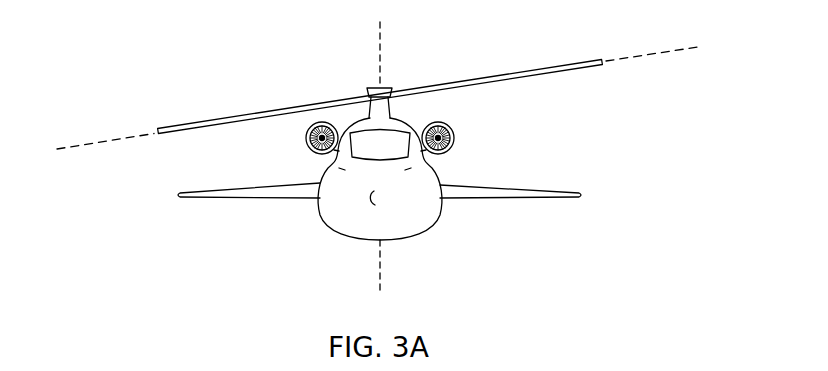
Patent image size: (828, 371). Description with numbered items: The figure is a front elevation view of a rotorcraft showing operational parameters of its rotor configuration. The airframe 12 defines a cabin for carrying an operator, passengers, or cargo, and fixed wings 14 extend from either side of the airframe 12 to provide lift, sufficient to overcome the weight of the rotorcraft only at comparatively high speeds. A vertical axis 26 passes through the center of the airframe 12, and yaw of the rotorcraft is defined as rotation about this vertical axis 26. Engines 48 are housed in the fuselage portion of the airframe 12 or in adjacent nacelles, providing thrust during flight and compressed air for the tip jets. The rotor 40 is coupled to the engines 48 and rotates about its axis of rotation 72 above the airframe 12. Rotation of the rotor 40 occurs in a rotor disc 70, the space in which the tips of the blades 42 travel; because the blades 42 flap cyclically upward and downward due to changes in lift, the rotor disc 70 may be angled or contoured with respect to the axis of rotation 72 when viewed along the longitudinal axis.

The airframe 12 is at (347, 213).
The fixed wings 14 is at (258, 198).
The vertical axis 26 is at (385, 275).
The rotor 40 is at (380, 78).
The blades 42 is at (216, 121).
The engines 48 is at (306, 139).
The rotor disc 70 is at (645, 54).
The rotor axis of rotation 72 is at (386, 40).